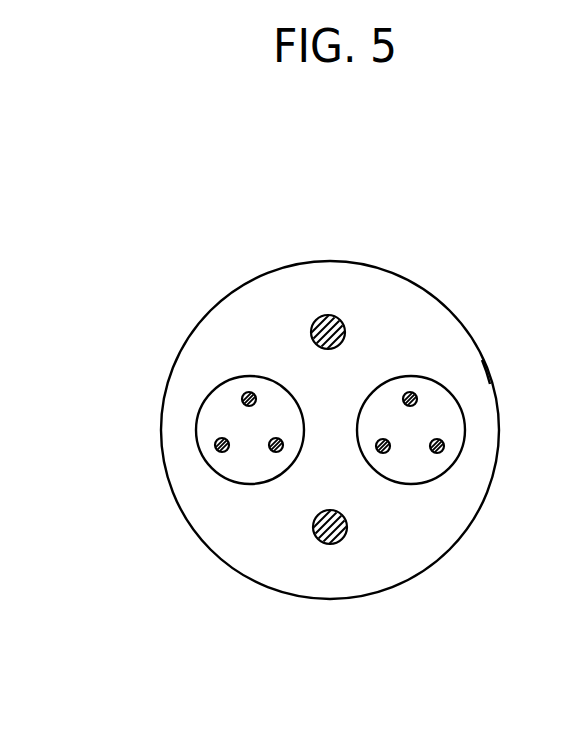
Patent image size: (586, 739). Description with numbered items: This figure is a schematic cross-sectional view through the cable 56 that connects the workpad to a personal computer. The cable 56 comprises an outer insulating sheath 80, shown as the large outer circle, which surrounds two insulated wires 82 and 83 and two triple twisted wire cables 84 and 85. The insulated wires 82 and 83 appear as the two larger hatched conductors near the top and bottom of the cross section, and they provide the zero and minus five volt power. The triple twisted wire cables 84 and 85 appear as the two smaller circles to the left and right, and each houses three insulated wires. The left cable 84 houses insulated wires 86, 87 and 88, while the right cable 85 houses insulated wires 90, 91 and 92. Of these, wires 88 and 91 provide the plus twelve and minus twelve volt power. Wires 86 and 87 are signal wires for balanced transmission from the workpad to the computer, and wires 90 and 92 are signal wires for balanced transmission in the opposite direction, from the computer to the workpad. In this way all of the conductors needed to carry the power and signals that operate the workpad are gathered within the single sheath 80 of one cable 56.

The cable 56 is at (342, 263).
The outer insulating sheath 80 is at (482, 360).
The insulated wire 82 is at (340, 320).
The insulated wire 83 is at (338, 543).
The triple twisted wire cable 84 is at (237, 378).
The triple twisted wire cable 85 is at (418, 378).
The signal wire 86 is at (242, 397).
The signal wire 87 is at (226, 450).
The power wire 88 is at (273, 451).
The signal wire 90 is at (417, 398).
The power wire 91 is at (443, 450).
The signal wire 92 is at (388, 451).